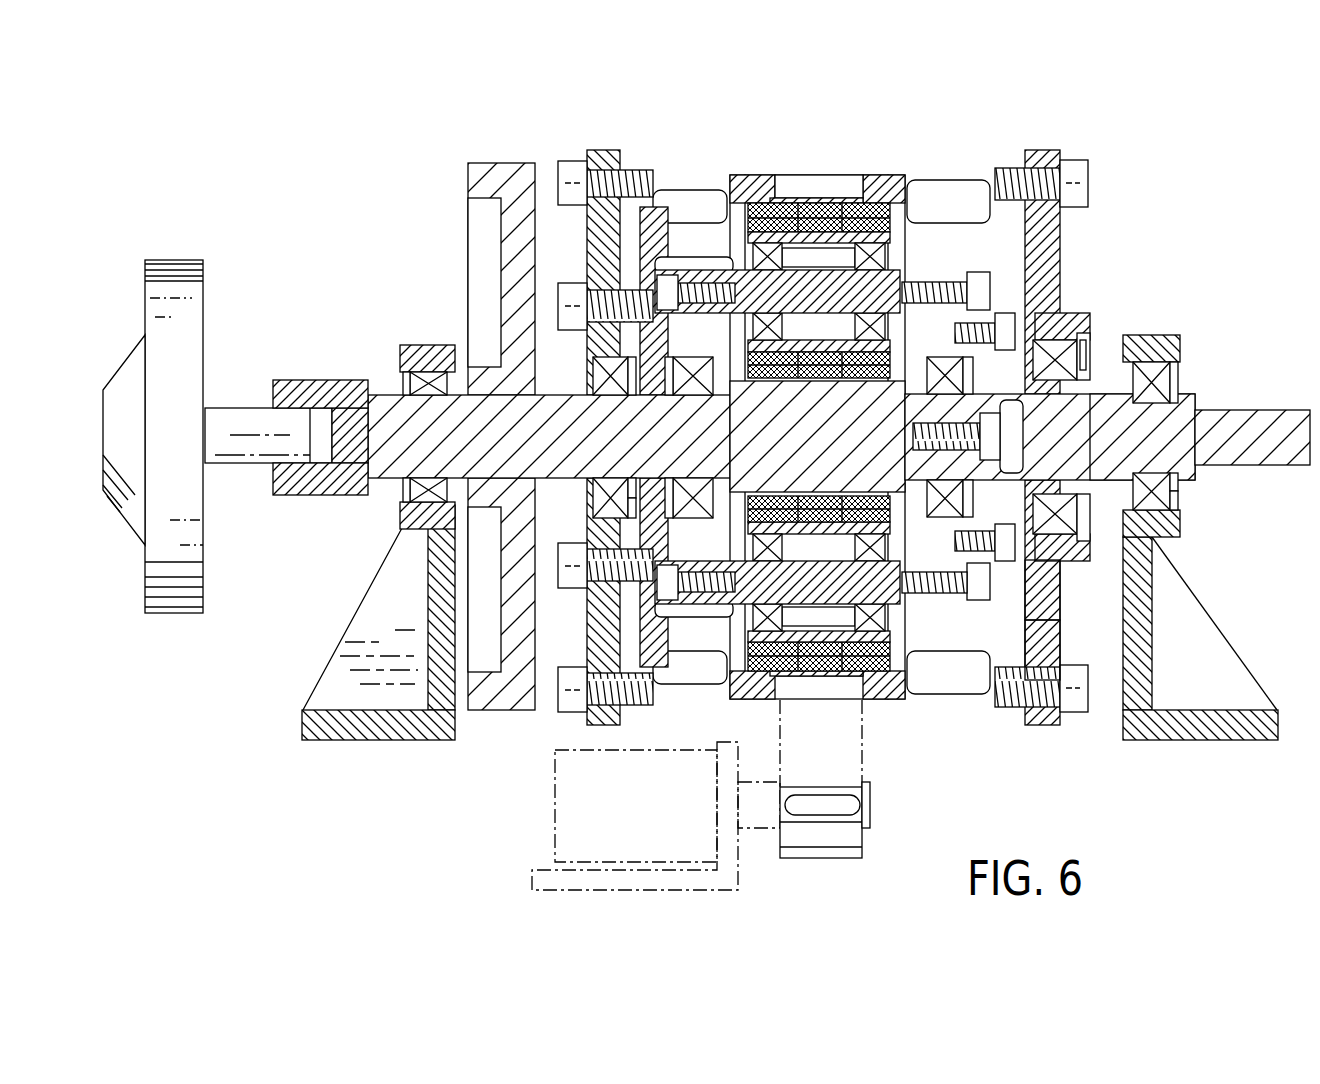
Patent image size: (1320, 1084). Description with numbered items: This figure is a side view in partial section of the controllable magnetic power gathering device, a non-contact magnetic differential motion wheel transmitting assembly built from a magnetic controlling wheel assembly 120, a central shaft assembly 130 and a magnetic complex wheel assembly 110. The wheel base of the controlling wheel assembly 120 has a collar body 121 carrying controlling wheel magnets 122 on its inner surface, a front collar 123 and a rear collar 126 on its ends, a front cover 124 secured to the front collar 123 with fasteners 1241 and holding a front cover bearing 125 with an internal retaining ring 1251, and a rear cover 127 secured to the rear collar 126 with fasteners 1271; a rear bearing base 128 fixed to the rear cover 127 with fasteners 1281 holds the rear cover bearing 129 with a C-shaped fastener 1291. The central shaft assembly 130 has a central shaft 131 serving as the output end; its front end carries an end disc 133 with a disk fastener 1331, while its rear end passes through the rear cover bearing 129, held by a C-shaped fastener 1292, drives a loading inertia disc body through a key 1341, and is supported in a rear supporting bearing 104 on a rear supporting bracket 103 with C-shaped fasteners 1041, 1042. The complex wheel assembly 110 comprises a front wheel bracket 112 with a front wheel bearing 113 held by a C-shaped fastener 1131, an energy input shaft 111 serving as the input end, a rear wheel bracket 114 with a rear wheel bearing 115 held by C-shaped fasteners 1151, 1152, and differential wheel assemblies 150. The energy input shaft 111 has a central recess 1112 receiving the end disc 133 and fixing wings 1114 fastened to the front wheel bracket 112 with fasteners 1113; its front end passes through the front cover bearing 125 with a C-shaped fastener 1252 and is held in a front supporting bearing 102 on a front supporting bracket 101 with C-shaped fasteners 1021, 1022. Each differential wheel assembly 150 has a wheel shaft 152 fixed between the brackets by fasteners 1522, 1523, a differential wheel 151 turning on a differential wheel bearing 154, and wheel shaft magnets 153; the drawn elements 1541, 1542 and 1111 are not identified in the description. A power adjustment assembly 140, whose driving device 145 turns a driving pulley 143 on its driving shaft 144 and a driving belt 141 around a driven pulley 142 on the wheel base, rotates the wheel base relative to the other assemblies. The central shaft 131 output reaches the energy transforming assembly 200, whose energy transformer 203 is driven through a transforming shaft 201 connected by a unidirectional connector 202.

The front supporting bracket 101 is at (1206, 742).
The front supporting bearing 102 is at (1160, 490).
The C-shaped fastener 1021 is at (1176, 505).
The C-shaped fastener 1022 is at (1176, 478).
The rear supporting bracket 103 is at (355, 740).
The rear supporting bearing 104 is at (428, 345).
The C-shaped fastener 1041 is at (420, 380).
The C-shaped fastener 1042 is at (406, 392).
The magnetic complex wheel assembly 110 is at (1195, 392).
The energy input shaft 111 is at (1230, 412).
The front wheel bracket 112 is at (992, 460).
The front wheel bearing 113 is at (978, 285).
The C-shaped fastener 1131 is at (1008, 330).
The rear wheel bracket 114 is at (668, 280).
The rear wheel bearing 115 is at (690, 508).
The C-shaped fastener 1151 is at (655, 600).
The C-shaped fastener 1152 is at (648, 682).
The magnetic controlling wheel assembly 120 is at (898, 180).
The collar body 121 is at (808, 212).
The controlling wheel magnets 122 is at (880, 192).
The front collar 123 is at (930, 200).
The front cover 124 is at (1030, 168).
The fasteners 1241 is at (1080, 185).
The front cover bearing 125 is at (1045, 310).
The internal retaining ring 1251 is at (1062, 330).
The C-shaped fastener 1252 is at (1150, 350).
The rear collar 126 is at (630, 160).
The rear cover 127 is at (600, 157).
The fasteners 1271 is at (565, 170).
The rear bearing base 128 is at (612, 347).
The fasteners 1281 is at (572, 572).
The rear cover bearing 129 is at (600, 372).
The C-shaped fastener 1291 is at (633, 517).
The C-shaped fastener 1292 is at (630, 483).
The central shaft assembly 130 is at (392, 482).
The central shaft 131 is at (345, 425).
The end disc 133 is at (1055, 360).
The disk fastener 1331 is at (1082, 356).
The key 1341 is at (497, 420).
The power adjustment assembly 140 is at (800, 868).
The driving belt 141 is at (792, 735).
The driven pulley 142 is at (790, 190).
The driving pulley 143 is at (825, 850).
The driving shaft 144 is at (868, 803).
The driving device 145 is at (574, 827).
The differential wheel assembly 150 is at (897, 176).
The differential wheel 151 is at (800, 197).
The wheel shaft 152 is at (695, 275).
The fasteners 1522 is at (985, 285).
The fasteners 1523 is at (652, 200).
The wheel shaft magnets 153 is at (770, 178).
The differential wheel bearing 154 is at (900, 592).
The bolt head 1541 is at (900, 585).
The bearing 1542 is at (930, 520).
The energy transforming assembly 200 is at (215, 252).
The transforming shaft 201 is at (225, 420).
The unidirectional connector 202 is at (320, 385).
The energy transformer 203 is at (172, 616).
The bearing 1111 is at (1065, 570).
The central recess 1112 is at (1040, 641).
The fasteners 1113 is at (1055, 600).
The fixing wings 1114 is at (1127, 540).